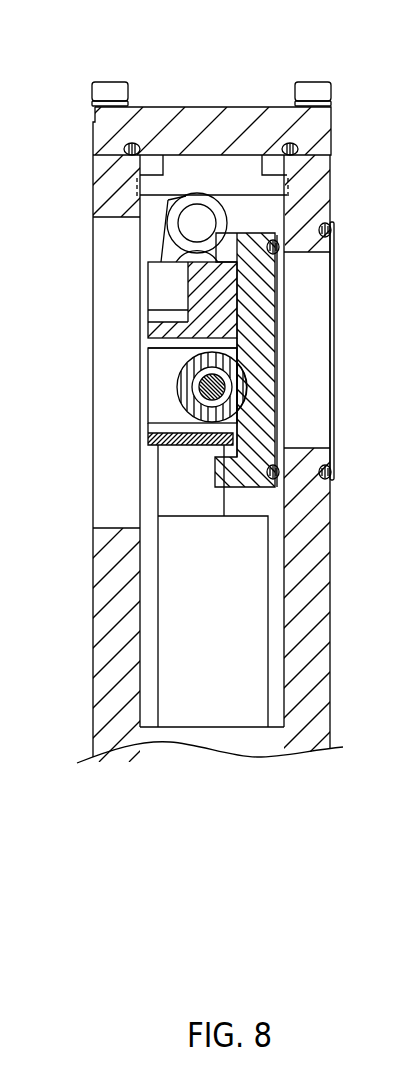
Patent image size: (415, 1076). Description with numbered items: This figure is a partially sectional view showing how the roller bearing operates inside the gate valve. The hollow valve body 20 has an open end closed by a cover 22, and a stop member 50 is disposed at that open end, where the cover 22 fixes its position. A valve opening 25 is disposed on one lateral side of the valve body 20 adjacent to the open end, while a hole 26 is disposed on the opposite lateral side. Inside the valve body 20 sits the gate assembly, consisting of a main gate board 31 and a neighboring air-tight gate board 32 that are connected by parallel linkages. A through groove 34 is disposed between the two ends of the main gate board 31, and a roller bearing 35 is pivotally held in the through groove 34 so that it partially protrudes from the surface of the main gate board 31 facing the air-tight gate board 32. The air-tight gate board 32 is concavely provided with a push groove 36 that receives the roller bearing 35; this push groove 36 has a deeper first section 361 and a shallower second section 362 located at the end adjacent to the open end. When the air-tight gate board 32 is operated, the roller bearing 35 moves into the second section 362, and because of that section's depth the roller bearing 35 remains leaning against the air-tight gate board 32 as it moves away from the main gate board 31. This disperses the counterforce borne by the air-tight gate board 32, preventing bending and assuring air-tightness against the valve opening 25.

The valve body 20 is at (115, 603).
The cover 22 is at (157, 113).
The valve opening 25 is at (312, 388).
The hole 26 is at (118, 485).
The main gate board 31 is at (208, 302).
The air-tight gate board 32 is at (262, 278).
The through groove 34 is at (165, 412).
The roller bearing 35 is at (183, 383).
The push groove 36 is at (272, 427).
The first section 361 is at (250, 399).
The second section 362 is at (237, 352).
The stop member 50 is at (221, 168).